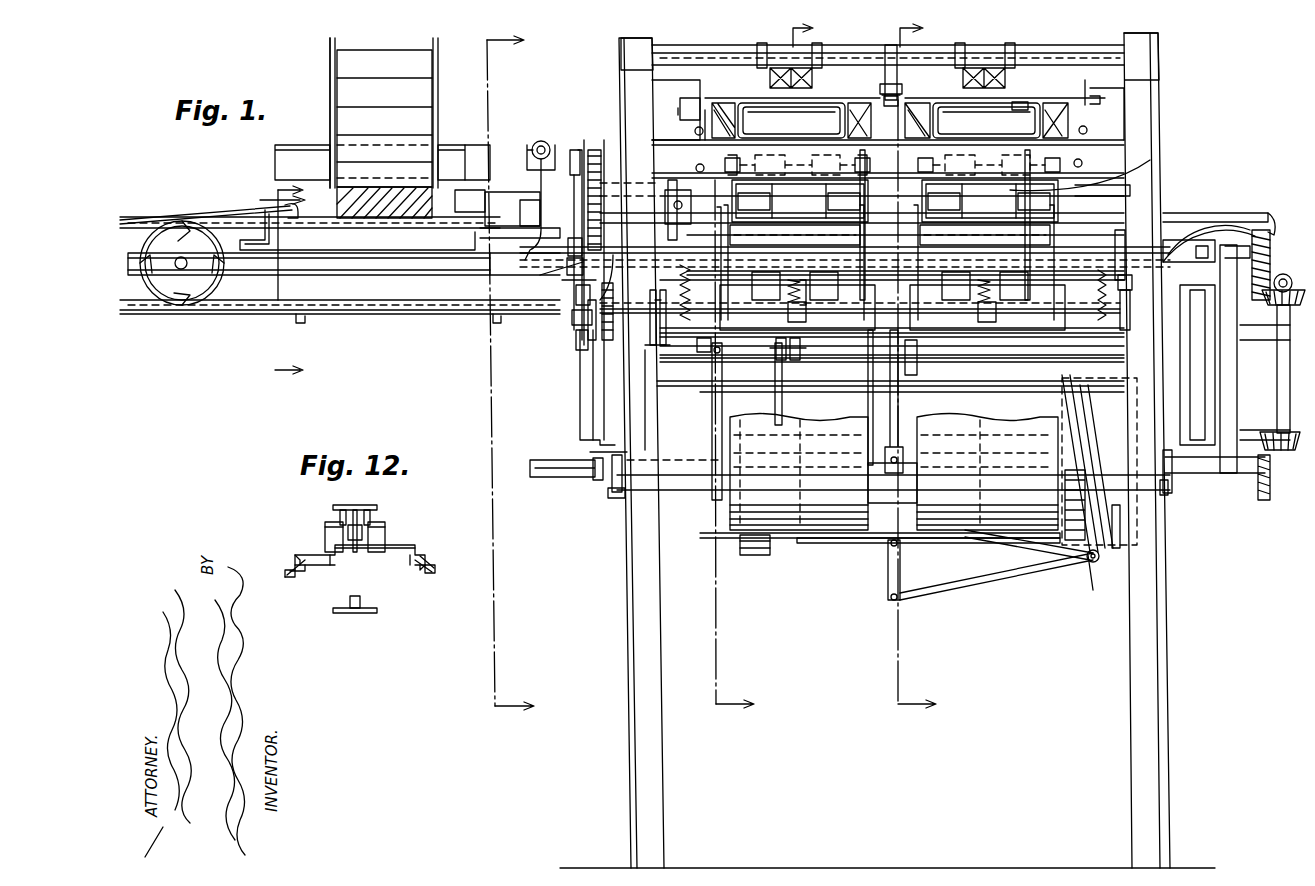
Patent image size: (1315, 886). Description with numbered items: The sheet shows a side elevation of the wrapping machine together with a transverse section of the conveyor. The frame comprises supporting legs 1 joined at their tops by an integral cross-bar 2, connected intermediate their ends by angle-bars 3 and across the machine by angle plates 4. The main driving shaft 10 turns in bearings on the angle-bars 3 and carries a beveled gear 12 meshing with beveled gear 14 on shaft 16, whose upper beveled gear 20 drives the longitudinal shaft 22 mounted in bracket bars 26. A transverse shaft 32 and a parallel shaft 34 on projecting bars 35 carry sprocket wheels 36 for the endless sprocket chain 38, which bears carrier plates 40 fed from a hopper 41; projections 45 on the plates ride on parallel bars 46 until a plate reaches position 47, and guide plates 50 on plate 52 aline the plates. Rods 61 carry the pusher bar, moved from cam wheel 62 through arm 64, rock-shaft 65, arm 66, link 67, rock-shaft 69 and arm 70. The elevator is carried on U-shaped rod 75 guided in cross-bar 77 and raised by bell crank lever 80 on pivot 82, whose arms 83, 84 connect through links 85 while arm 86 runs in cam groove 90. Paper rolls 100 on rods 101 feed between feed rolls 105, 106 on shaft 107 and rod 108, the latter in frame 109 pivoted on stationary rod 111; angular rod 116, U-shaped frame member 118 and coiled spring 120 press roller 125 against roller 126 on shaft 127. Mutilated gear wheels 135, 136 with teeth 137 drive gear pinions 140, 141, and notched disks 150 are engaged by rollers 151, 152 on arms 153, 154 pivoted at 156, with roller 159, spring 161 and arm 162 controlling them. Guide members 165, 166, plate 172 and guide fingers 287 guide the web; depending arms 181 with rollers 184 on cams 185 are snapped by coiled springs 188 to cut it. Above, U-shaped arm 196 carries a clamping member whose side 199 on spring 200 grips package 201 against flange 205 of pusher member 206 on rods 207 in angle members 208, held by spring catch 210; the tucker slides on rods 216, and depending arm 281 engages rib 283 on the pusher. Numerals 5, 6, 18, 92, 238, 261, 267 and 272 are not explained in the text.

In FIG. 1, the supporting legs 1 is at (632, 690).
In FIG. 1, the cross-bar 2 is at (632, 70).
In FIG. 1, the angle-bars 3 is at (1228, 490).
In FIG. 1, the angle plates 4 is at (275, 145).
In FIG. 1, the section line 5 is at (755, 370).
In FIG. 1, the section line 6 is at (907, 371).
In FIG. 1, the main driving shaft 10 is at (540, 460).
In FIG. 1, the beveled gear 12 is at (1274, 500).
In FIG. 1, the beveled gear 14 is at (1292, 445).
In FIG. 1, the shaft 16 is at (1290, 360).
In FIG. 1, the bevel gear 18 is at (1298, 296).
In FIG. 1, the beveled gear 20 is at (1270, 262).
In FIG. 1, the horizontal shaft 22 is at (1240, 248).
In FIG. 1, the bracket bars 26 is at (612, 498).
In FIG. 1, the transverse shaft 32 is at (1189, 249).
In FIG. 1, the shaft 34 is at (181, 269).
In FIG. 1, the projecting bars 35 is at (355, 262).
In FIG. 12, the projecting bars 35 is at (285, 575).
In FIG. 1, the sprocket wheels 36 is at (245, 290).
In FIG. 1, the sprocket chain 38 is at (380, 312).
In FIG. 12, the sprocket chain 38 is at (357, 552).
In FIG. 1, the carrier plates 40 is at (190, 205).
In FIG. 12, the carrier plates 40 is at (365, 505).
In FIG. 1, the hopper 41 is at (328, 54).
In FIG. 1, the projections 45 is at (500, 250).
In FIG. 12, the projections 45 is at (340, 512).
In FIG. 1, the parallel bars 46 is at (280, 230).
In FIG. 12, the parallel bars 46 is at (325, 525).
In FIG. 1, the position 47 is at (512, 209).
In FIG. 1, the guide plates 50 is at (464, 162).
In FIG. 1, the plate 52 is at (520, 239).
In FIG. 1, the rods 61 is at (706, 158).
In FIG. 1, the cam wheel 62 is at (760, 555).
In FIG. 1, the arm 64 is at (722, 420).
In FIG. 1, the rock-shaft 65 is at (892, 368).
In FIG. 1, the arm 66 is at (770, 355).
In FIG. 1, the link 67 is at (783, 402).
In FIG. 1, the rock-shaft 69 is at (612, 468).
In FIG. 1, the arm 70 is at (900, 405).
In FIG. 1, the U-shaped rod 75 is at (842, 543).
In FIG. 1, the cross-bar 77 is at (580, 405).
In FIG. 1, the bell crank lever 80 is at (1085, 562).
In FIG. 1, the stationary pivot 82 is at (1091, 587).
In FIG. 1, the arm 83 is at (1015, 574).
In FIG. 1, the arm 84 is at (1020, 538).
In FIG. 1, the links 85 is at (885, 590).
In FIG. 1, the arm 86 is at (1060, 500).
In FIG. 1, the cam groove 90 is at (1090, 400).
In FIG. 1, the pin 92 is at (1116, 548).
In FIG. 1, the rolls 100 is at (728, 530).
In FIG. 1, the rods 101 is at (680, 492).
In FIG. 1, the feed roll 105 is at (890, 375).
In FIG. 1, the feed roll 106 is at (836, 320).
In FIG. 1, the shaft 107 is at (1060, 348).
In FIG. 1, the rod 108 is at (705, 350).
In FIG. 1, the frame 109 is at (869, 397).
In FIG. 1, the stationary rod 111 is at (1150, 133).
In FIG. 1, the angular rod 116 is at (890, 235).
In FIG. 1, the U-shaped frame member 118 is at (875, 162).
In FIG. 1, the coiled spring 120 is at (891, 267).
In FIG. 1, the roller 125 is at (888, 158).
In FIG. 1, the roller 126 is at (895, 201).
In FIG. 1, the shaft 127 is at (608, 165).
In FIG. 1, the mutilated gear wheel 135 is at (572, 318).
In FIG. 1, the mutilated gear wheel 136 is at (576, 340).
In FIG. 1, the teeth 137 is at (552, 275).
In FIG. 1, the gear pinion 140 is at (584, 140).
In FIG. 1, the gear pinion 141 is at (588, 330).
In FIG. 1, the notched disks 150 is at (580, 150).
In FIG. 1, the roller 151 is at (575, 290).
In FIG. 1, the roller 152 is at (575, 150).
In FIG. 1, the arm 153 is at (560, 268).
In FIG. 1, the arm 154 is at (574, 175).
In FIG. 1, the pivot 156 is at (525, 195).
In FIG. 1, the roller 159 is at (584, 244).
In FIG. 1, the spring 161 is at (533, 145).
In FIG. 1, the arm 162 is at (528, 160).
In FIG. 1, the guide member 165 is at (700, 280).
In FIG. 1, the guide member 166 is at (700, 250).
In FIG. 1, the plate 172 is at (1090, 200).
In FIG. 1, the depending arms 181 is at (648, 365).
In FIG. 1, the rollers 184 is at (1128, 318).
In FIG. 1, the cams 185 is at (650, 330).
In FIG. 1, the coiled springs 188 is at (1090, 290).
In FIG. 1, the U-shaped arm 196 is at (757, 46).
In FIG. 1, the clamping member side 199 is at (770, 72).
In FIG. 1, the spring 200 is at (815, 80).
In FIG. 1, the package 201 is at (380, 72).
In FIG. 1, the flange 205 is at (888, 124).
In FIG. 1, the pusher member 206 is at (686, 102).
In FIG. 1, the rods 207 is at (678, 108).
In FIG. 1, the angle members 208 is at (652, 95).
In FIG. 1, the spring catch 210 is at (760, 96).
In FIG. 1, the rods 216 is at (694, 131).
In FIG. 1, the lug 238 is at (862, 94).
In FIG. 1, the plate 261 is at (889, 115).
In FIG. 1, the lug 267 is at (900, 156).
In FIG. 1, the funnel 272 is at (725, 103).
In FIG. 1, the depending arm 281 is at (899, 55).
In FIG. 1, the rib 283 is at (903, 80).
In FIG. 1, the guide fingers 287 is at (894, 201).